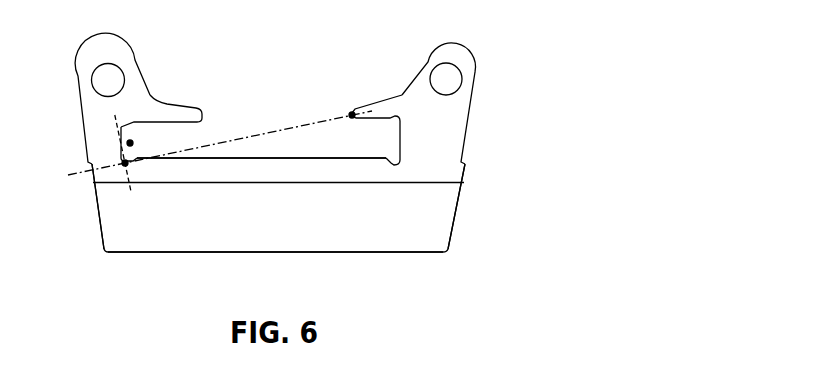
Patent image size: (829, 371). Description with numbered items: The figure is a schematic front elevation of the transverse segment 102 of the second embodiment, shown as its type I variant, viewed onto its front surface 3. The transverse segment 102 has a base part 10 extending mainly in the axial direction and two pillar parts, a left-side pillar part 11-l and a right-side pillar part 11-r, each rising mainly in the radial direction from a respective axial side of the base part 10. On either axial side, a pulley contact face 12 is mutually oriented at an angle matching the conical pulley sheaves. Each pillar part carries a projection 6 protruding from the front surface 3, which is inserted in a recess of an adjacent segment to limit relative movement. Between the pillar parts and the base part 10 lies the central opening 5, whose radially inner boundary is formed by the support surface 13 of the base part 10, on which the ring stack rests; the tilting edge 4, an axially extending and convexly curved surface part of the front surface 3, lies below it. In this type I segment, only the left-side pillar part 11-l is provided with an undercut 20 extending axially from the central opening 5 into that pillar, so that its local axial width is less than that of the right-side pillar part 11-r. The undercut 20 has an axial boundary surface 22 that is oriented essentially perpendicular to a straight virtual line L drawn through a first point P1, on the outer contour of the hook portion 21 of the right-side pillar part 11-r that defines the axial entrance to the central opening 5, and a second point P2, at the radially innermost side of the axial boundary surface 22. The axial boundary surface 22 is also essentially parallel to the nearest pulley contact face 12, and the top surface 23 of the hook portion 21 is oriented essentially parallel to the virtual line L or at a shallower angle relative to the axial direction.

The front surface 3 is at (453, 135).
The left-side pillar part 11-l is at (82, 76).
The right-side pillar part 11-r is at (465, 65).
The projection 6 is at (115, 72).
The hook portion 21 is at (171, 110).
The axial boundary surface 22 is at (117, 148).
The undercut 20 is at (130, 143).
The central opening 5 is at (324, 153).
The support surface 13 is at (210, 167).
The top surface 23 is at (372, 95).
The first point P1 is at (350, 113).
The second point P2 is at (123, 164).
The virtual line L is at (246, 140).
The tilting edge 4 is at (287, 191).
The base part 10 is at (452, 198).
The pulley contact face 12 is at (92, 224).
The transverse segment 102 is at (350, 253).